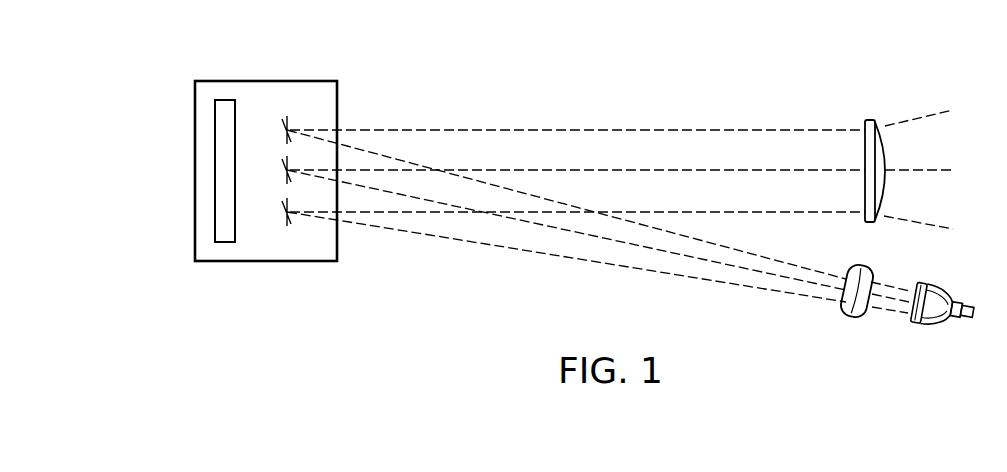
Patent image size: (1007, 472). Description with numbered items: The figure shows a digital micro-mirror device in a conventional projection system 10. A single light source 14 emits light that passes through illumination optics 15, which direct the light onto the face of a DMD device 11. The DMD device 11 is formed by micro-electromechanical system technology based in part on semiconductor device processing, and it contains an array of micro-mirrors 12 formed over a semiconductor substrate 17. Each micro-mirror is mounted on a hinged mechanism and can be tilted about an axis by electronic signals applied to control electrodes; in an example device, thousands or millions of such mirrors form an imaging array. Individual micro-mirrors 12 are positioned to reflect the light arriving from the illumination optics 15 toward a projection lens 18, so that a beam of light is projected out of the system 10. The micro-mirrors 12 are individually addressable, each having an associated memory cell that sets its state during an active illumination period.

The projection system 10 is at (468, 70).
The DMD device 11 is at (265, 261).
The micro-mirrors 12 is at (283, 172).
The light source 14 is at (925, 325).
The illumination optics 15 is at (850, 318).
The semiconductor substrate 17 is at (236, 172).
The projection lens 18 is at (885, 162).